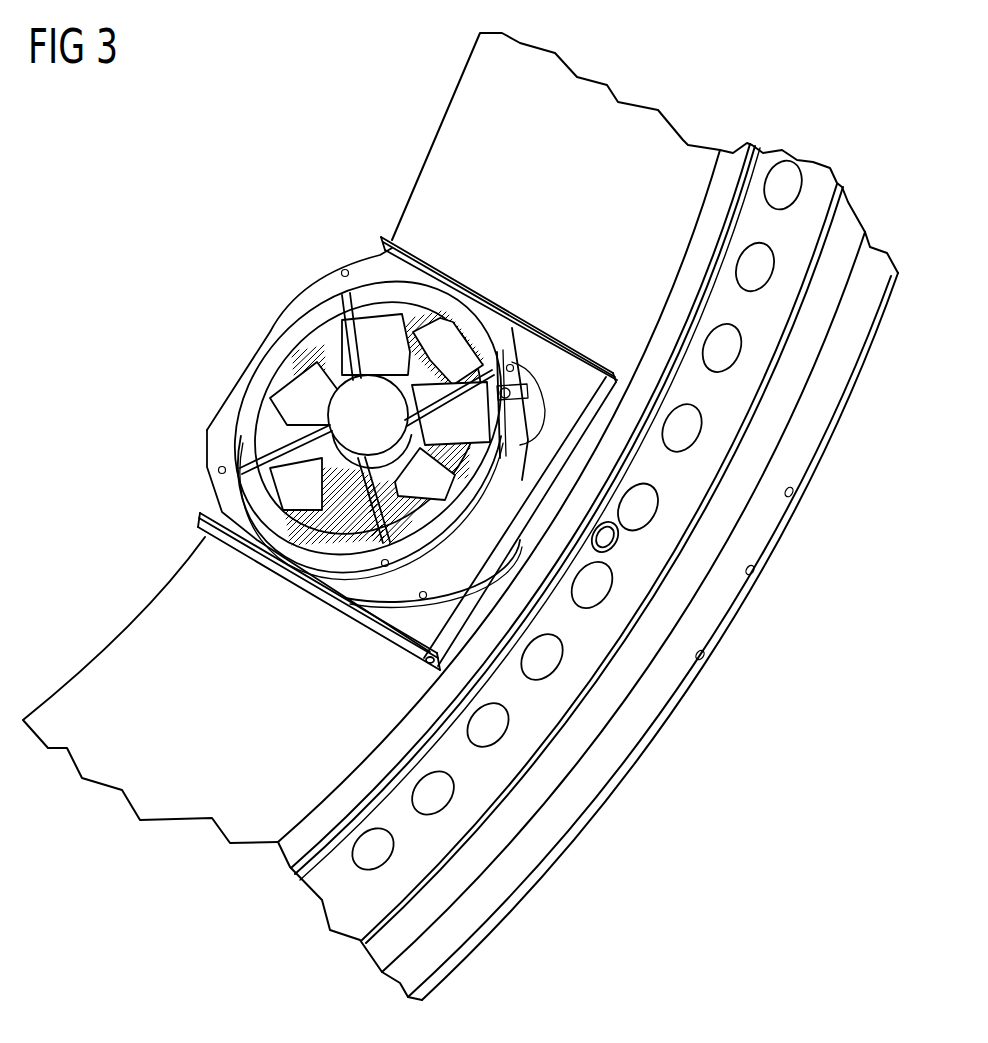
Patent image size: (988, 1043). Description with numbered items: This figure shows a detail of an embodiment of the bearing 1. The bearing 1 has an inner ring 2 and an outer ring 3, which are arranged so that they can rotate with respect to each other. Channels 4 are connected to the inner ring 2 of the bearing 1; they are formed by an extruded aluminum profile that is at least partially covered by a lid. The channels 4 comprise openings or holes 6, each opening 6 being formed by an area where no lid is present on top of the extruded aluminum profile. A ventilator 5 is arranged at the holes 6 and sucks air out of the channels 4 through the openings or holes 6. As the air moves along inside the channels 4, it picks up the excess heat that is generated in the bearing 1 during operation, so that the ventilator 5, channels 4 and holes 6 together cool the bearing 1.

The bearing 1 is at (234, 285).
The inner ring 2 is at (737, 381).
The outer ring 3 is at (727, 607).
The channels 4 is at (143, 627).
The ventilator 5 is at (338, 415).
The openings or holes 6 is at (323, 543).